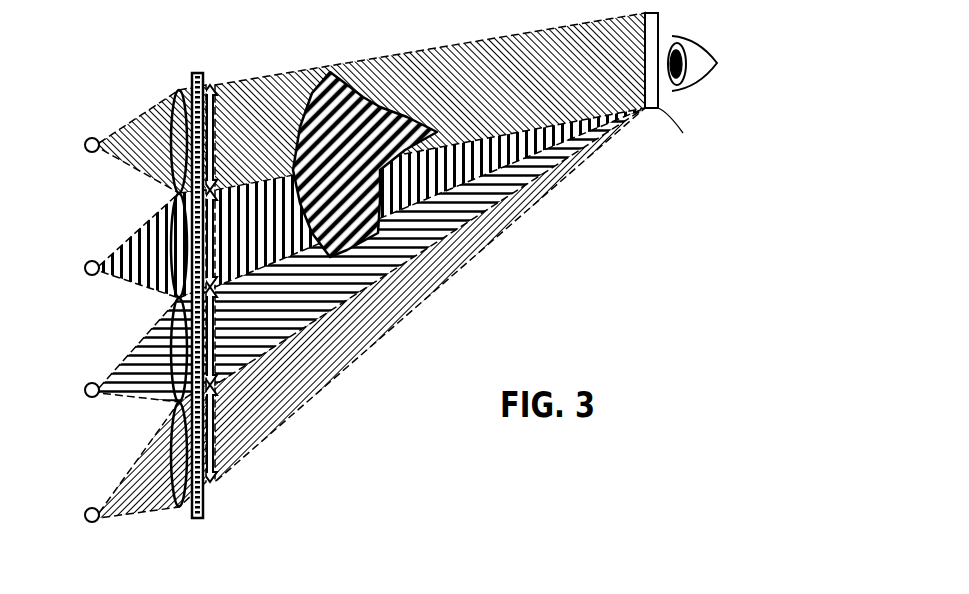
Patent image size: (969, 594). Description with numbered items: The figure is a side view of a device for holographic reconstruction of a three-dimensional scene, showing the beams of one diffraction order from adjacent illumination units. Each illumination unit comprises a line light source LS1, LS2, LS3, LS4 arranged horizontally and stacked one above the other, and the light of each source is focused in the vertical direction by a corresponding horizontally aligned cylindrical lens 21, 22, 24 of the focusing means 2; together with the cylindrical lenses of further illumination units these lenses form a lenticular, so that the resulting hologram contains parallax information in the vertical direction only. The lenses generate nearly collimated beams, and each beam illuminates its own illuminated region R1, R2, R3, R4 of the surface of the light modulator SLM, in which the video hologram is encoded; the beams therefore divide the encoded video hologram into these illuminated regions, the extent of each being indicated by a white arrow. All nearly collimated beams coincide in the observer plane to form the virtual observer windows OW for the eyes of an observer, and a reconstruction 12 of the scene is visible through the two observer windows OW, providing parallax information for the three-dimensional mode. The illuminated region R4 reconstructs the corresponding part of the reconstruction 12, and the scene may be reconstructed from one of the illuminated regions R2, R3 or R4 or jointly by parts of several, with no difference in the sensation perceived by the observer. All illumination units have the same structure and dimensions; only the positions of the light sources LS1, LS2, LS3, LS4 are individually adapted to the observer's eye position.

The focusing means 2 is at (180, 280).
The reconstruction 12 is at (357, 100).
The cylindrical lens 21 is at (177, 487).
The cylindrical lens 22 is at (178, 358).
The cylindrical lens 24 is at (178, 127).
The illuminated region R1 is at (211, 442).
The illuminated region R2 is at (217, 332).
The illuminated region R3 is at (215, 225).
The illuminated region R4 is at (208, 85).
The line light source LS1 is at (72, 529).
The line light source LS2 is at (72, 404).
The line light source LS3 is at (152, 244).
The line light source LS4 is at (72, 159).
The light modulator SLM is at (195, 321).
The observer window OW is at (691, 100).